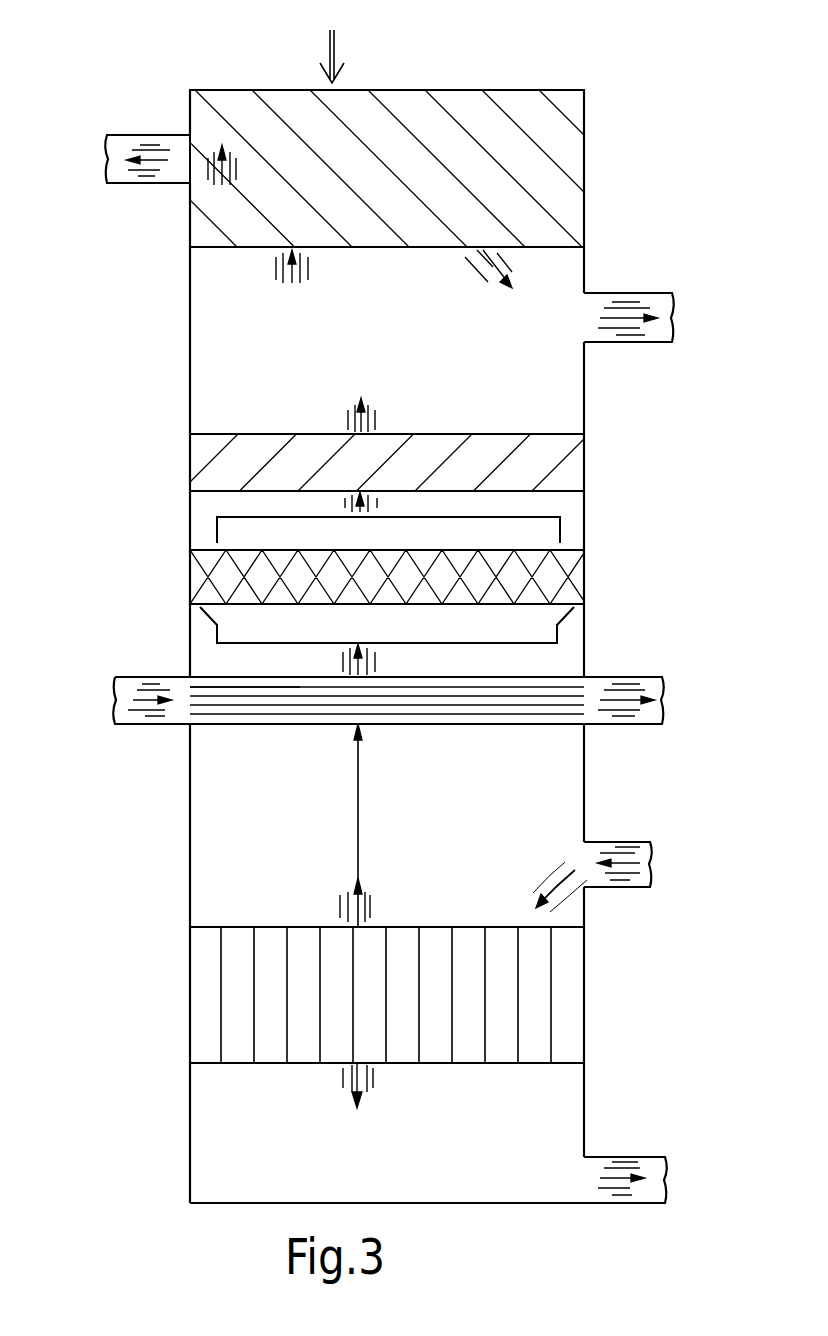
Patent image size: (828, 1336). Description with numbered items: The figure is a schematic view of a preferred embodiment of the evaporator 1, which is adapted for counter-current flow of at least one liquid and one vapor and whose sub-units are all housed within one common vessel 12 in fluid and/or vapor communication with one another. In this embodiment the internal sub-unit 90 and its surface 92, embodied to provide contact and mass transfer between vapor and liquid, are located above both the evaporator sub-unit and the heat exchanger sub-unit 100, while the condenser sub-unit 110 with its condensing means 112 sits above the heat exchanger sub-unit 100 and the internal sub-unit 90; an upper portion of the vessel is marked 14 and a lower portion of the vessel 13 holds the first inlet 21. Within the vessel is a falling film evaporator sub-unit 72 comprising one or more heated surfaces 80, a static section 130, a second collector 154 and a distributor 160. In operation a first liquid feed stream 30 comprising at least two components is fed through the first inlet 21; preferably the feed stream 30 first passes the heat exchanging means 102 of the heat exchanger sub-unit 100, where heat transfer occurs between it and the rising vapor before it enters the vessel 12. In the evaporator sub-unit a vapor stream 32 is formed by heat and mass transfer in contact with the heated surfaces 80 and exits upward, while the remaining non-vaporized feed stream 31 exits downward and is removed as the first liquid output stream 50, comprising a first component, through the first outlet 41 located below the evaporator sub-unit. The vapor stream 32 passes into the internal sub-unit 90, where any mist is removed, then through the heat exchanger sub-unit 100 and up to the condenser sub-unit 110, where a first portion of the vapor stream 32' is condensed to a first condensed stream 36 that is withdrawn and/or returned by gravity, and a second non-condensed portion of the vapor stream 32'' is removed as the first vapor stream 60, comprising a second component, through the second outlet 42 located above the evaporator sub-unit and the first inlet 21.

The evaporator 1 is at (332, 41).
The common vessel 12 is at (585, 415).
The lower portion of the vessel 13 is at (189, 855).
The upper housing section 14 is at (189, 347).
The first inlet 21 is at (582, 867).
The first liquid feed stream 30 is at (133, 700).
The remaining non-vaporized feed stream 31 is at (353, 1080).
The vapor stream 32 is at (380, 577).
The first portion of the vapor stream 32' is at (239, 113).
The second non-condensed portion of the vapor stream 32'' is at (553, 237).
The first condensed stream 36 is at (155, 155).
The first outlet 41 is at (587, 1190).
The second outlet 42 is at (585, 315).
The first liquid output stream 50 is at (610, 1178).
The first vapor stream 60 is at (628, 318).
The falling film evaporator sub-unit 72 is at (567, 985).
The heated surfaces 80 is at (252, 1010).
The internal sub-unit 90 is at (213, 468).
The surface 92 is at (220, 492).
The heat exchanger sub-unit 100 is at (525, 725).
The heat exchanging means 102 is at (228, 697).
The condenser sub-unit 110 is at (566, 167).
The condensing means 112 is at (394, 155).
The static section 130 is at (562, 578).
The second collector 154 is at (240, 643).
The distributor 160 is at (215, 533).